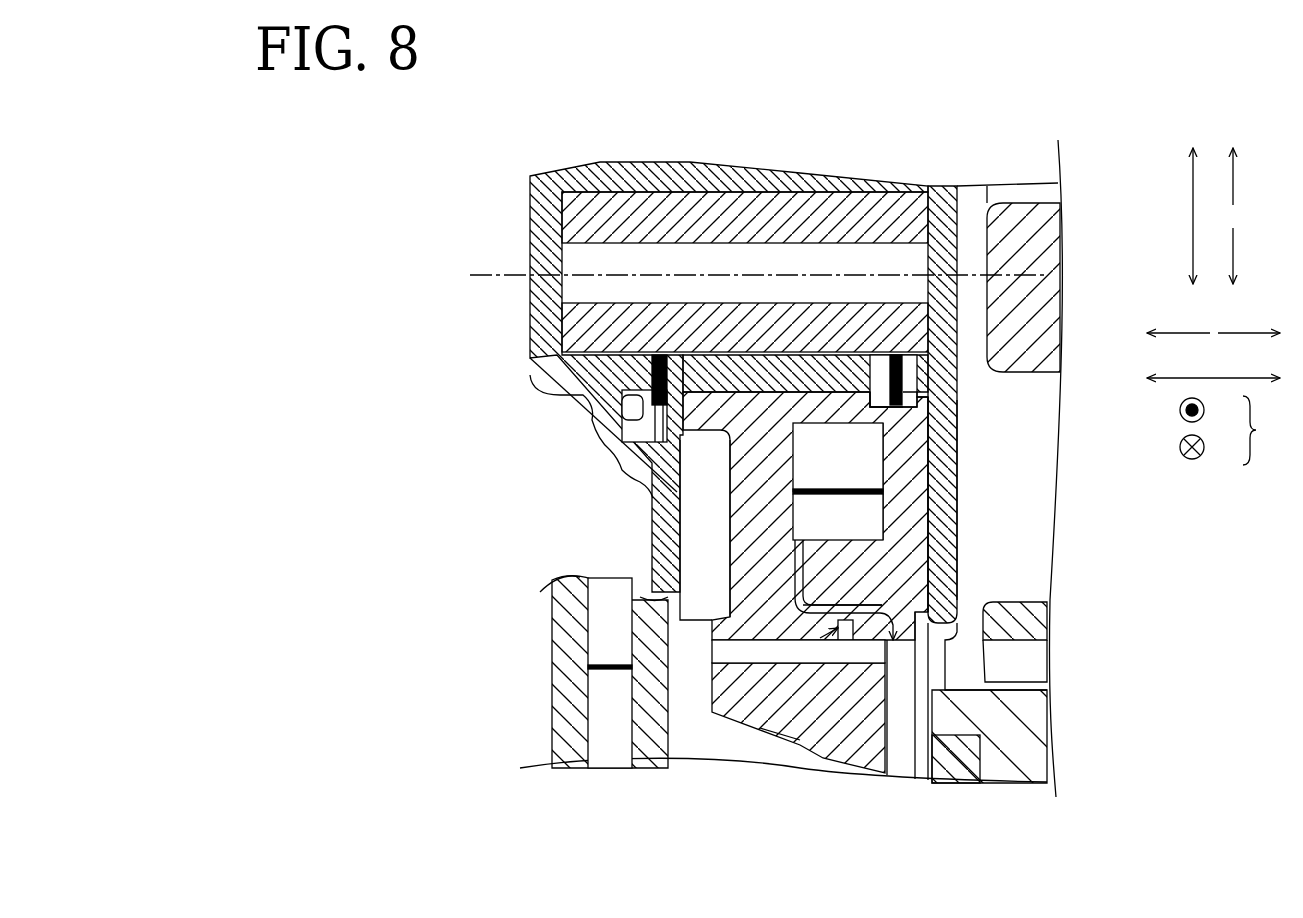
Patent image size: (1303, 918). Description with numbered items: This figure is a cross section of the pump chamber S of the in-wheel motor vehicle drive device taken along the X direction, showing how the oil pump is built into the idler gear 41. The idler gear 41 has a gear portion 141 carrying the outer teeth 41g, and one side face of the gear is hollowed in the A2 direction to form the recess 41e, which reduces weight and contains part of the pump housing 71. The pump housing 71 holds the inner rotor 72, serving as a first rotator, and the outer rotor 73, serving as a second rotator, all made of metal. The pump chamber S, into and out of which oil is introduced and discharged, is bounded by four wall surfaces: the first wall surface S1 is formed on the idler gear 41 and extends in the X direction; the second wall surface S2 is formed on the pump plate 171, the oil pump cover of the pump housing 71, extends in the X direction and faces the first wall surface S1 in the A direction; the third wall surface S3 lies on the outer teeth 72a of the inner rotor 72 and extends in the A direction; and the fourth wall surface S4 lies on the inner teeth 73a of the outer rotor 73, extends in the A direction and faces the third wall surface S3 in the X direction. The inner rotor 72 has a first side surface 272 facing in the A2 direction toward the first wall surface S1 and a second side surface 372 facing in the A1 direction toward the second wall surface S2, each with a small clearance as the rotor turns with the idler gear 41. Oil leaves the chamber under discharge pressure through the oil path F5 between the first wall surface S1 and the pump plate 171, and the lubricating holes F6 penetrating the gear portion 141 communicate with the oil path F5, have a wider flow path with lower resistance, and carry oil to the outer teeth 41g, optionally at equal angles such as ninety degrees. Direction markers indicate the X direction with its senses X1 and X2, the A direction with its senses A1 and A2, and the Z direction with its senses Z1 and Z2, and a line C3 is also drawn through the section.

The idler gear 41 is at (705, 497).
The recess 41e is at (815, 522).
The outer teeth 41g is at (890, 658).
The gear portion 141 is at (708, 636).
The inner rotor 72 is at (912, 437).
The outer teeth 72a is at (920, 440).
The first side surface 272 is at (884, 442).
The second side surface 372 is at (880, 458).
The outer rotor 73 is at (935, 555).
The inner teeth 73a is at (905, 530).
The pump housing 71 is at (958, 578).
The pump plate 171 is at (922, 500).
The pump chamber S is at (788, 562).
The first wall surface S1 is at (797, 468).
The second wall surface S2 is at (930, 478).
The third wall surface S3 is at (870, 407).
The fourth wall surface S4 is at (850, 545).
The oil path F5 is at (712, 708).
The lubricating hole F6 is at (762, 722).
The center axis C3 is at (492, 270).
The X direction X is at (1204, 216).
The X1 direction X1 is at (1252, 256).
The X2 direction X2 is at (1252, 176).
The A direction A is at (1213, 362).
The A1 direction A1 is at (1249, 316).
The A2 direction A2 is at (1178, 316).
The Z direction Z is at (1262, 430).
The Z1 direction Z1 is at (1210, 408).
The Z2 direction Z2 is at (1210, 445).